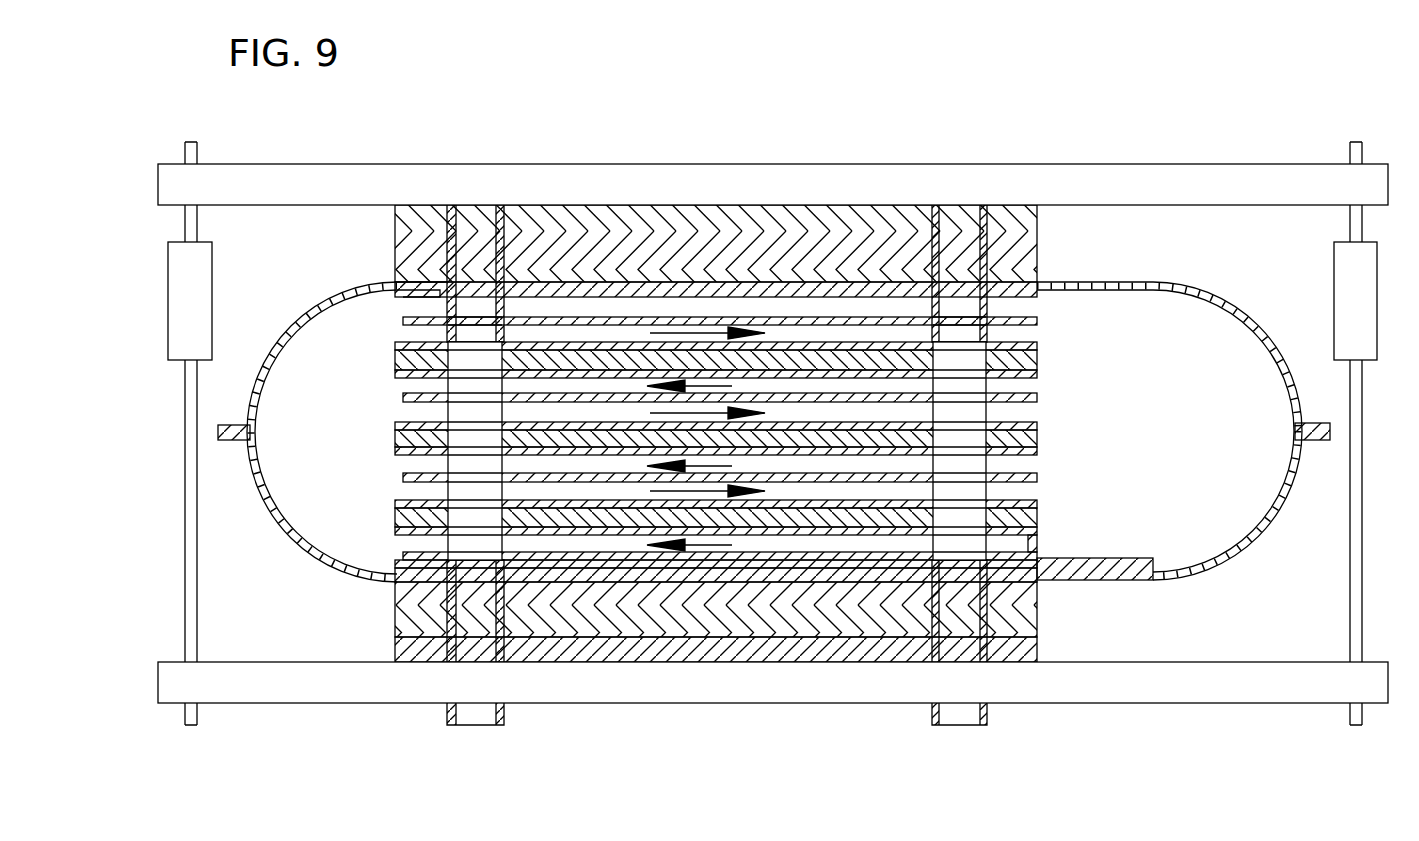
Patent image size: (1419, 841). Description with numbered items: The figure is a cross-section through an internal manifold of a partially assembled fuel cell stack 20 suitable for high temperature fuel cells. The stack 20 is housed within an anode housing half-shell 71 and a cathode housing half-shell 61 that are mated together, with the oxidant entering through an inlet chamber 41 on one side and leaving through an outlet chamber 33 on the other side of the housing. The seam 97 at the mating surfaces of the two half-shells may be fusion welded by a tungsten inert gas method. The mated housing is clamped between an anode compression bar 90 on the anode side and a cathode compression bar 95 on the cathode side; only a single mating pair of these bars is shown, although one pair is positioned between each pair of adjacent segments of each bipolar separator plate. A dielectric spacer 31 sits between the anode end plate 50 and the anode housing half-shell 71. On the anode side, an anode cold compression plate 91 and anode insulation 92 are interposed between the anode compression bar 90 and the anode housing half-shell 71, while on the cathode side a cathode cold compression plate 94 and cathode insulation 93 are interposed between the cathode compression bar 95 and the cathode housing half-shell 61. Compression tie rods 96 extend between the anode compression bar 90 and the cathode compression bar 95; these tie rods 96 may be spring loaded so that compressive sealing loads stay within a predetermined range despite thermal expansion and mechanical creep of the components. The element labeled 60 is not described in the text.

The fuel cell stack 20 is at (1037, 455).
The dielectric spacer 31 is at (1153, 570).
The outlet chamber 33 is at (1182, 396).
The inlet chamber 41 is at (349, 449).
The anode end plate 50 is at (1040, 537).
The chamber wall joint 60 is at (400, 286).
The cathode housing half-shell 61 is at (1233, 306).
The anode housing half-shell 71 is at (1240, 553).
The anode compression bar 90 is at (1100, 703).
The anode cold compression plate 91 is at (1037, 645).
The anode insulation 92 is at (1037, 605).
The cathode insulation 93 is at (1037, 263).
The cathode cold compression plate 94 is at (1037, 215).
The cathode compression bar 95 is at (1108, 163).
The compression tie rod 96 is at (199, 150).
The seam 97 is at (222, 432).